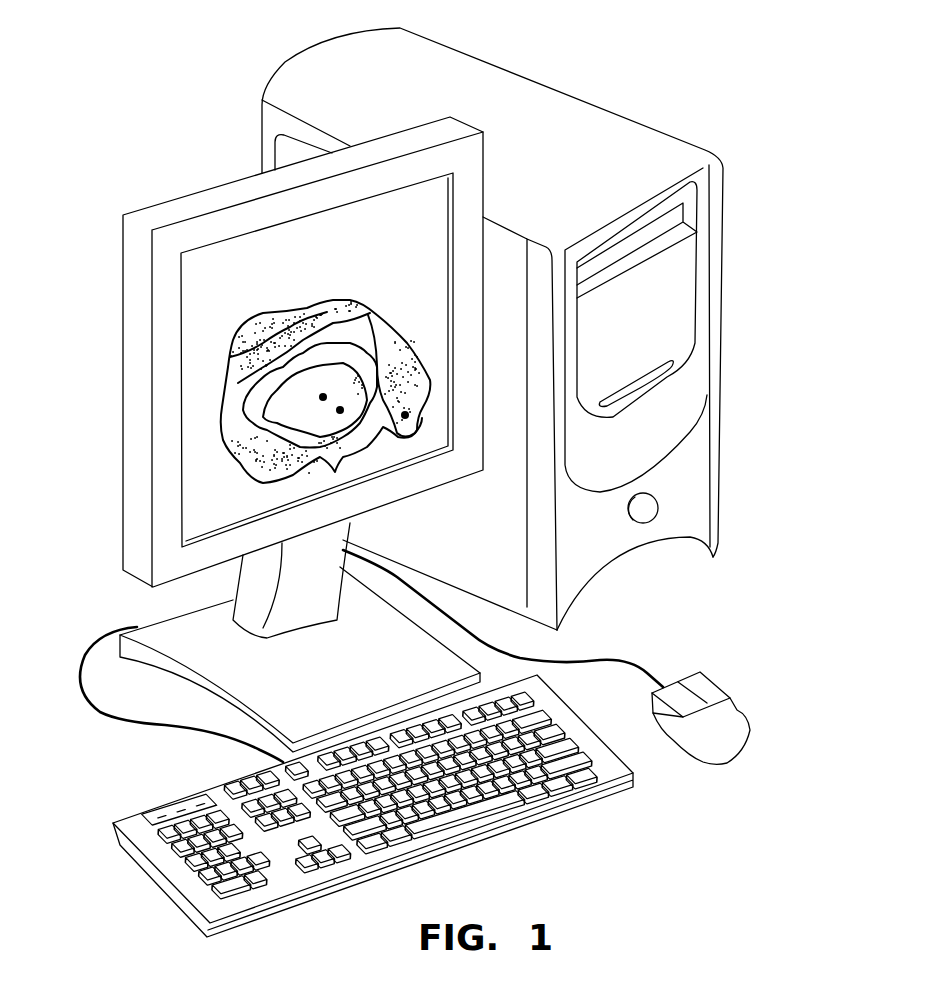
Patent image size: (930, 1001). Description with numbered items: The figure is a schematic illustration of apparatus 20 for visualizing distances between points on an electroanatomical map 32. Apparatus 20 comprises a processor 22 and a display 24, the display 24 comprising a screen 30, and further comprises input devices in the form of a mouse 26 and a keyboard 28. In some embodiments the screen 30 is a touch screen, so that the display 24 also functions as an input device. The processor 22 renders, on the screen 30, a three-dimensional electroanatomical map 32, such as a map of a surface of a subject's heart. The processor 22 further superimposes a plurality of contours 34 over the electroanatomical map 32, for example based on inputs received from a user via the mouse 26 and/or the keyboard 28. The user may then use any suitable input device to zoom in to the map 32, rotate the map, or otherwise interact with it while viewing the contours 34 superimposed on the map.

The apparatus 20 is at (150, 117).
The processor 22 is at (708, 408).
The display 24 is at (270, 434).
The mouse 26 is at (735, 717).
The keyboard 28 is at (162, 858).
The screen 30 is at (193, 415).
The electroanatomical map 32 is at (321, 362).
The contours 34 is at (300, 315).